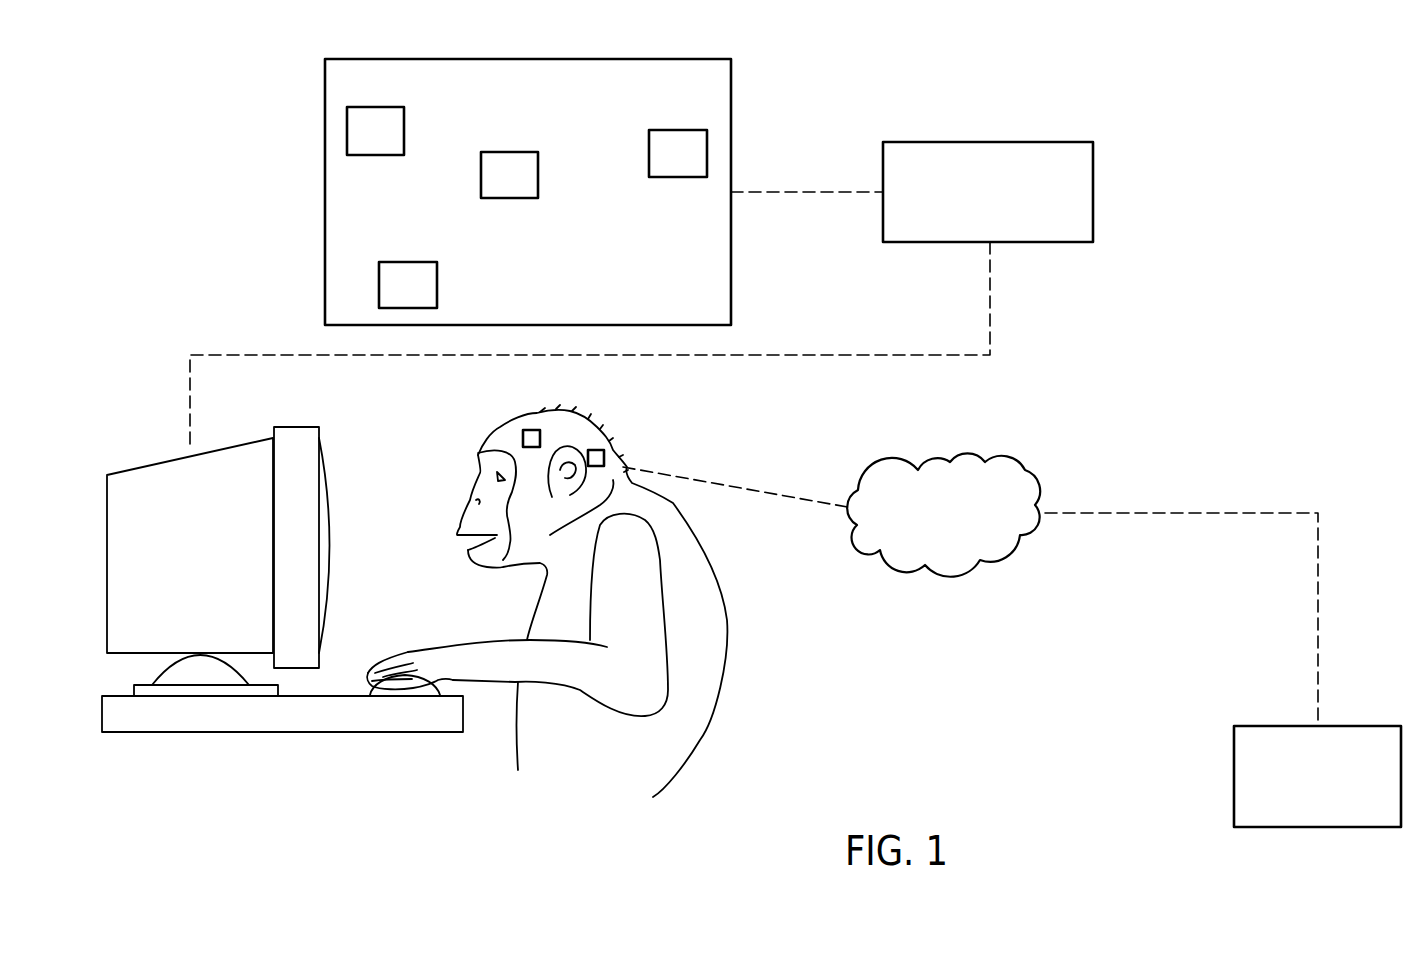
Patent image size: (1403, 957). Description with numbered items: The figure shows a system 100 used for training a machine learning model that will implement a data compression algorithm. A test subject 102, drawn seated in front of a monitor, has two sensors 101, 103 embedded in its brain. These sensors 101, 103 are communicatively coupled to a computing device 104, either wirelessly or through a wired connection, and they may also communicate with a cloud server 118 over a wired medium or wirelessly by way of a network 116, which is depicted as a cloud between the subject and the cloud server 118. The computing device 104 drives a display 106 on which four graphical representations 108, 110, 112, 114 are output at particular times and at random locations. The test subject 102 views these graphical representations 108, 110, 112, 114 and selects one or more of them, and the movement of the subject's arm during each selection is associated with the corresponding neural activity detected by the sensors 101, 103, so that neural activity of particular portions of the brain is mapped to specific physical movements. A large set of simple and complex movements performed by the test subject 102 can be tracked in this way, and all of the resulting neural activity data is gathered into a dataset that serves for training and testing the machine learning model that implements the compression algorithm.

The brain-computer interface system 100 is at (1322, 175).
The sensor 101 is at (532, 430).
The test subject 102 is at (727, 617).
The sensor 103 is at (604, 458).
The computing device 104 is at (990, 142).
The display 106 is at (325, 95).
The graphical representation 108 is at (408, 262).
The graphical representation 110 is at (373, 155).
The graphical representation 112 is at (510, 198).
The graphical representation 114 is at (677, 130).
The network 116 is at (997, 452).
The cloud server 118 is at (1234, 776).